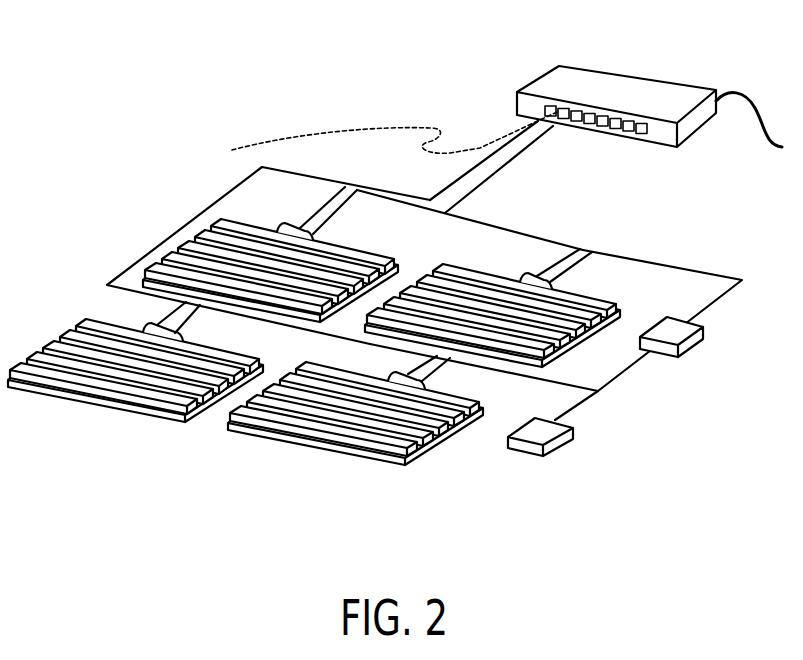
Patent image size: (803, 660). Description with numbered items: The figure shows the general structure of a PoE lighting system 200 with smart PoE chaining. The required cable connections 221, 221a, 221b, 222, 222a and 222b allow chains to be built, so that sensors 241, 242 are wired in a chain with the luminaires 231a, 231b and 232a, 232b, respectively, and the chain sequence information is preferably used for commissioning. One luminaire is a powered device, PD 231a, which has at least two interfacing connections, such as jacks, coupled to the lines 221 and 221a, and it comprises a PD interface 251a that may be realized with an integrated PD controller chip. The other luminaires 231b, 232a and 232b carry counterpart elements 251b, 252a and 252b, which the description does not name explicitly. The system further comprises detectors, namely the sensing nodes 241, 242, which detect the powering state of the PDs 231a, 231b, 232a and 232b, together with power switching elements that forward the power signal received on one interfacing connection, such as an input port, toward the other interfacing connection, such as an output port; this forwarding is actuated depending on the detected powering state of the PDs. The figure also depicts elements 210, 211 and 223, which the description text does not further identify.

The system 200 is at (178, 96).
The network switch / power supply unit 210 is at (542, 83).
The power cable 211 is at (757, 145).
The cable connection 221 is at (517, 137).
The cable connection 222 is at (543, 138).
The data connection 223 is at (231, 142).
The cable connection 221a is at (257, 318).
The cable connection 221b is at (480, 367).
The cable connection 222a is at (556, 242).
The cable connection 222b is at (652, 262).
The powered device (luminaire) 231a is at (95, 405).
The powered device (luminaire) 231b is at (283, 447).
The powered device (luminaire) 232a is at (382, 252).
The powered device (luminaire) 232b is at (478, 272).
The sensing node 241 is at (562, 445).
The sensing node 242 is at (693, 342).
The PD interface 251a is at (147, 330).
The connector 251b is at (397, 378).
The connector 252a is at (287, 224).
The connector 252b is at (550, 278).